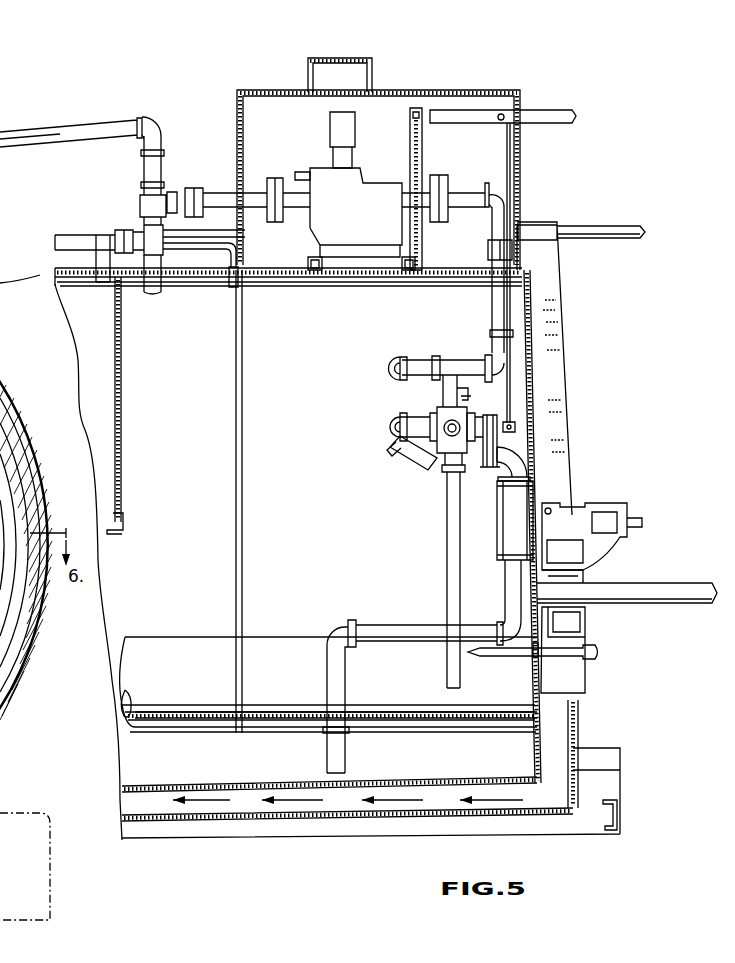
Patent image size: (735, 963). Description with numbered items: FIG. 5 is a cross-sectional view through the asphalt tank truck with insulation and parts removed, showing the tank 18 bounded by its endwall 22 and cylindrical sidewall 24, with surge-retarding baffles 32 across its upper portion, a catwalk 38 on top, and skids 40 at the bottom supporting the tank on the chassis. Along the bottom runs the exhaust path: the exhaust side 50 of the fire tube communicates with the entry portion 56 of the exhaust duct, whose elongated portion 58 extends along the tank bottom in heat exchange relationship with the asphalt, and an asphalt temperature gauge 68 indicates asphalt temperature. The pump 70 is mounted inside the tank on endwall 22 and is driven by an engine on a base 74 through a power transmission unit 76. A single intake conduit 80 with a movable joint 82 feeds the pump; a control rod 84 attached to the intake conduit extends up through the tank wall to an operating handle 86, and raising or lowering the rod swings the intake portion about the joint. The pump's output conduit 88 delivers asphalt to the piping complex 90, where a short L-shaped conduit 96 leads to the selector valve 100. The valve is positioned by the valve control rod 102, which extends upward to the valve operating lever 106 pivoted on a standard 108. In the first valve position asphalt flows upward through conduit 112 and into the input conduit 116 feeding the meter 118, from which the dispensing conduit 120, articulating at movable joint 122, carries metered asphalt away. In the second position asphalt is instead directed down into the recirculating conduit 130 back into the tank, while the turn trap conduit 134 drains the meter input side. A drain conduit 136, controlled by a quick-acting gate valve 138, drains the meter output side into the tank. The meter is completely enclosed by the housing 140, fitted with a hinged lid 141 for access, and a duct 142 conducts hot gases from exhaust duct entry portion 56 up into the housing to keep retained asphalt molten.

The tank 18 is at (280, 453).
The endwall 22 is at (530, 733).
The cylindrical sidewall 24 is at (58, 272).
The surge-retarding baffles 32 is at (122, 405).
The catwalk 38 is at (598, 223).
The skids 40 is at (343, 838).
The exhaust side of fire tube 50 is at (208, 637).
The entry portion of exhaust duct 56 is at (578, 740).
The elongated portion of exhaust duct 58 is at (276, 820).
The asphalt temperature gauge 68 is at (600, 655).
The pump 70 is at (498, 540).
The base 74 is at (631, 585).
The power transmission unit 76 is at (570, 503).
The intake conduit 80 is at (406, 627).
The movable joint 82 is at (340, 624).
The control rod 84 is at (243, 596).
The operating handle 86 is at (228, 285).
The output conduit 88 is at (517, 455).
The piping complex 90 is at (393, 460).
The L-shaped conduit 96 is at (418, 425).
The selector valve 100 is at (445, 458).
The valve control rod 102 is at (512, 396).
The valve operating lever 106 is at (533, 111).
The standard 108 is at (422, 160).
The conduit 112 is at (440, 385).
The input conduit 116 is at (458, 356).
The meter 118 is at (372, 221).
The dispensing conduit 120 is at (70, 125).
The movable joint 122 is at (162, 128).
The recirculating conduit 130 is at (448, 580).
The turn trap conduit 134 is at (522, 437).
The drain conduit 136 is at (152, 288).
The quick-acting gate valve 138 is at (136, 232).
The housing 140 is at (406, 90).
The hinged lid 141 is at (308, 62).
The duct 142 is at (562, 322).